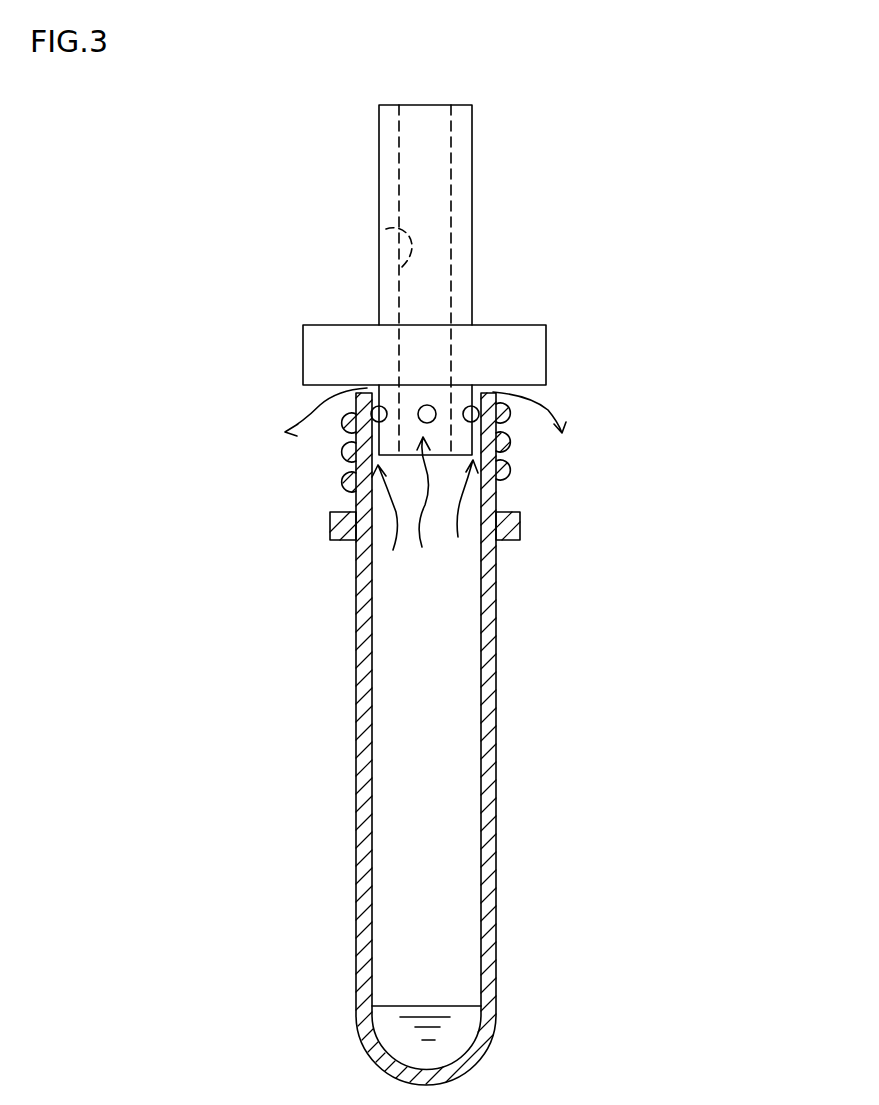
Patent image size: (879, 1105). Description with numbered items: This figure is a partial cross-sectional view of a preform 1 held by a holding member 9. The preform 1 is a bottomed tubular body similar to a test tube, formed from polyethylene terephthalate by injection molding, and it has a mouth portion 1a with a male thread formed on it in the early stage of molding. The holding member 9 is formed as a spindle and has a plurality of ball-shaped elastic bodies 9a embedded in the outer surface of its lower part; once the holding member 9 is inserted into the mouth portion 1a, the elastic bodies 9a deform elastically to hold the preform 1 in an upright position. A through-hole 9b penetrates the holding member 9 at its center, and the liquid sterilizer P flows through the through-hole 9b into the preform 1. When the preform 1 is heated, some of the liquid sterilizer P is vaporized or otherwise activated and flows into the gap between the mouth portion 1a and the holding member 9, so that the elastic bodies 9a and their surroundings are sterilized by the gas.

The preform 1 is at (496, 803).
The mouth portion 1a is at (353, 468).
The holding member 9 is at (471, 240).
The elastic bodies 9a is at (432, 422).
The through-hole 9b is at (386, 229).
The liquid sterilizer P is at (420, 1004).